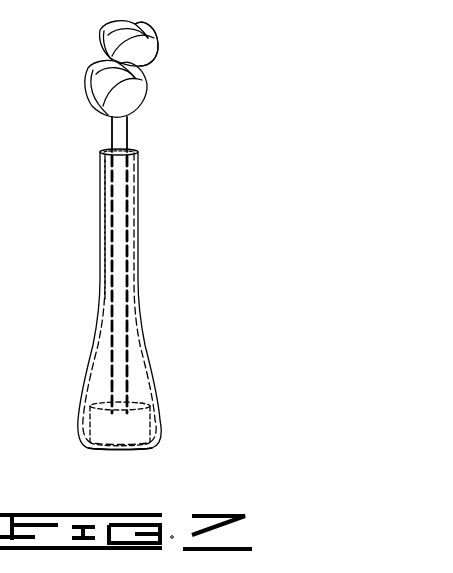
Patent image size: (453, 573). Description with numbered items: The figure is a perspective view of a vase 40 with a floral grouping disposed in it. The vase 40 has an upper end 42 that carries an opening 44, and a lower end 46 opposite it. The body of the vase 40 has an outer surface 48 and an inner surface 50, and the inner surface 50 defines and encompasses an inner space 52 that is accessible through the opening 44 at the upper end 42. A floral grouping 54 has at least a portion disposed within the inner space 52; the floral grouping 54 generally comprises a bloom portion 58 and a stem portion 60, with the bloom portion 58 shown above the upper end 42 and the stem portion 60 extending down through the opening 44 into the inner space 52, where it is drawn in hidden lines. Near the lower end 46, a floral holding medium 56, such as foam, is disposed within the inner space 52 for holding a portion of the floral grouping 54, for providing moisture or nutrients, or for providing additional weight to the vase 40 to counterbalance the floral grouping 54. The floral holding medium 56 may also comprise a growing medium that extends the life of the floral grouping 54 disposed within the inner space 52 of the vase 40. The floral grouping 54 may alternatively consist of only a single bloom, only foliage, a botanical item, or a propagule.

The vase 40 is at (172, 233).
The upper end 42 is at (138, 152).
The opening 44 is at (124, 150).
The lower end 46 is at (153, 447).
The outer surface 48 is at (145, 345).
The inner surface 50 is at (107, 222).
The inner space 52 is at (100, 387).
The floral grouping 54 is at (173, 68).
The floral holding medium 56 is at (138, 408).
The bloom portion 58 is at (143, 37).
The stem portion 60 is at (112, 130).